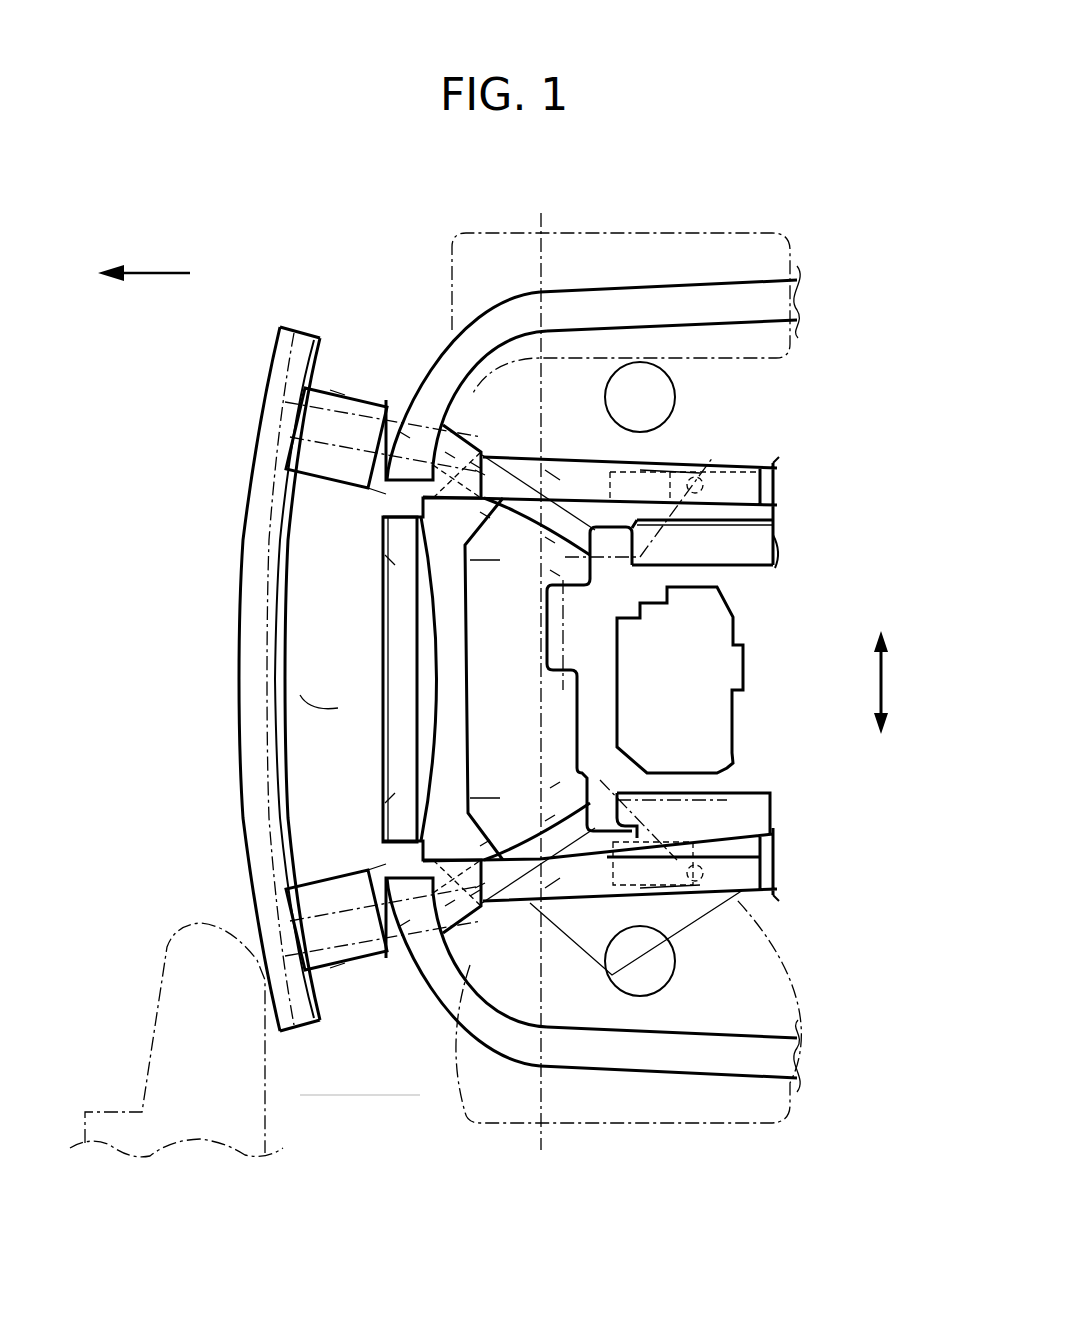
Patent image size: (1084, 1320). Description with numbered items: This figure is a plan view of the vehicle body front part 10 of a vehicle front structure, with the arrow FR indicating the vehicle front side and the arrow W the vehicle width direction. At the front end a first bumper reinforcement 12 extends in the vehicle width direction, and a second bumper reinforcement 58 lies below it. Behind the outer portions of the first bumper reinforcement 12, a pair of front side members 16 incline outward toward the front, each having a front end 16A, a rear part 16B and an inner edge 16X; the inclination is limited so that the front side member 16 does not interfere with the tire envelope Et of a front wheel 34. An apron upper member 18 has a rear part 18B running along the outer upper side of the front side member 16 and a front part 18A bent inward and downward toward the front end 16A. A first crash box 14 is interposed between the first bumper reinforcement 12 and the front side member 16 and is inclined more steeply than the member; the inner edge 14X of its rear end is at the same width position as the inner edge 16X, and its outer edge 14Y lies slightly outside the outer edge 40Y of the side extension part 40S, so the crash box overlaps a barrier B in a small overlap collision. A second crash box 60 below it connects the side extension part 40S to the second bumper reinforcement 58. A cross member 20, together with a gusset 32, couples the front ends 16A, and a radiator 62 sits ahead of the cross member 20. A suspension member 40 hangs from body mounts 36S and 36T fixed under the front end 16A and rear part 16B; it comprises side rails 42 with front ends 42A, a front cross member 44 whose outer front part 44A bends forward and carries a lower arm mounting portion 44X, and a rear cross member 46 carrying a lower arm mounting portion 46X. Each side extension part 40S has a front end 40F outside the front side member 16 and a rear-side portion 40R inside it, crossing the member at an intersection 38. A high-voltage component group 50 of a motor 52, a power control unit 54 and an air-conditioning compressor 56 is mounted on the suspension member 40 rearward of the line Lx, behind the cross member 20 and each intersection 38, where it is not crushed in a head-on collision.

The vehicle body front part 10 is at (358, 1097).
The first bumper reinforcement 12 is at (240, 636).
The first crash box 14 is at (328, 392).
The inner edge of rear end of first crash box 14X is at (382, 522).
The outer edge of rear end of first crash box 14Y is at (405, 435).
The front side member 16 is at (570, 684).
The front end of front side member 16A is at (482, 556).
The rear part of front side member 16B is at (672, 472).
The inner edge of front end of front side member 16X is at (387, 560).
The apron upper member 18 is at (593, 681).
The front part of apron upper member 18A is at (476, 326).
The rear part of apron upper member 18B is at (628, 304).
The cross member 20 is at (395, 677).
The gusset 32 is at (370, 497).
The front wheel 34 is at (490, 236).
The body mount 36S is at (475, 462).
The body mount 36T is at (700, 478).
The intersection 38 is at (483, 512).
The suspension member 40 is at (598, 681).
The front end of side extension part 40F is at (445, 395).
The rear-side portion of side extension part 40R is at (693, 550).
The side extension part 40S is at (570, 500).
The outer edge of front end of side extension part 40Y is at (388, 428).
The side rail 42 is at (553, 572).
The front end of side rail 42A is at (478, 465).
The front cross member 44 is at (475, 686).
The front part of front cross member 44A is at (450, 450).
The lower arm mounting portion 44X is at (548, 540).
The rear cross member 46 is at (565, 722).
The lower arm mounting portion 46X is at (617, 617).
The high-voltage component group 50 is at (750, 670).
The motor 52 is at (548, 634).
The power control unit 54 is at (632, 660).
The air-conditioning compressor 56 is at (672, 785).
The second bumper reinforcement 58 is at (268, 605).
The second crash box 60 is at (347, 393).
The radiator 62 is at (311, 689).
The barrier B is at (157, 973).
The tire envelope Et is at (812, 960).
The long dashed double-short dashed line Lx is at (546, 262).
The vehicle front direction FR is at (126, 275).
The vehicle width direction W is at (884, 683).